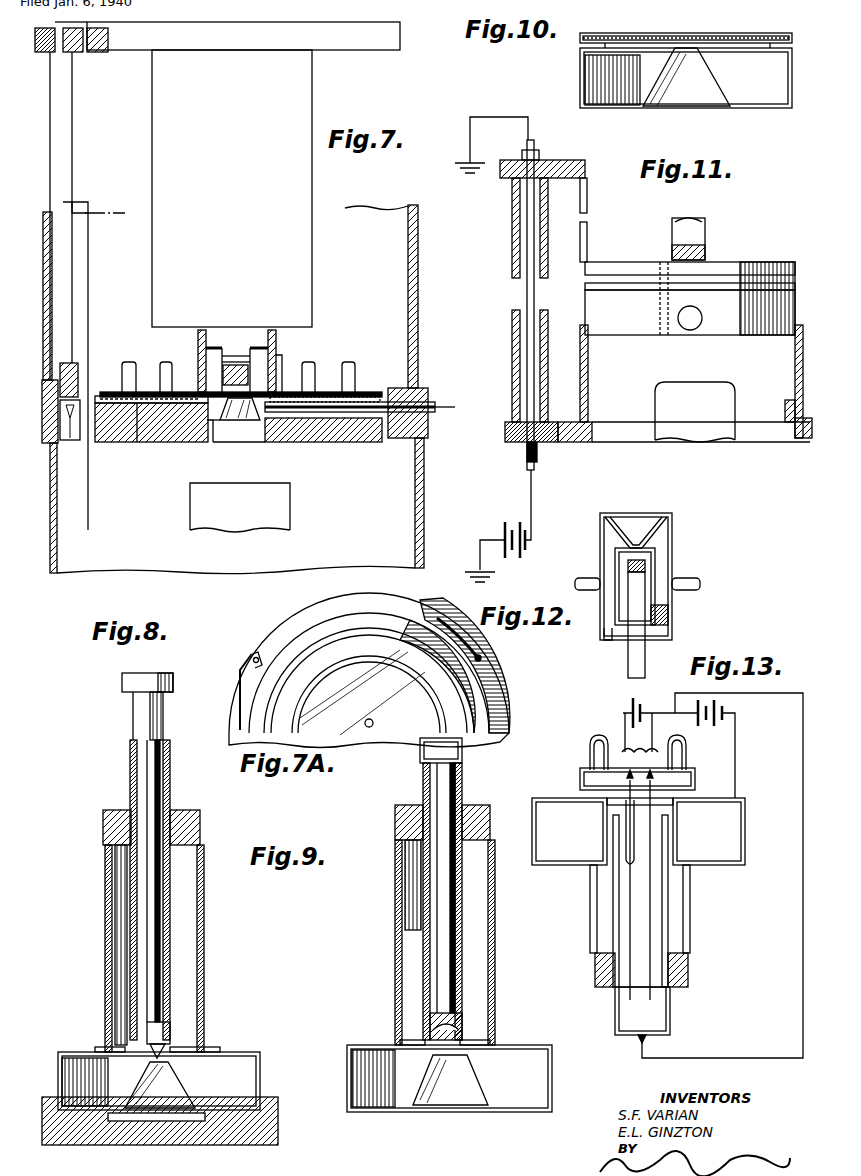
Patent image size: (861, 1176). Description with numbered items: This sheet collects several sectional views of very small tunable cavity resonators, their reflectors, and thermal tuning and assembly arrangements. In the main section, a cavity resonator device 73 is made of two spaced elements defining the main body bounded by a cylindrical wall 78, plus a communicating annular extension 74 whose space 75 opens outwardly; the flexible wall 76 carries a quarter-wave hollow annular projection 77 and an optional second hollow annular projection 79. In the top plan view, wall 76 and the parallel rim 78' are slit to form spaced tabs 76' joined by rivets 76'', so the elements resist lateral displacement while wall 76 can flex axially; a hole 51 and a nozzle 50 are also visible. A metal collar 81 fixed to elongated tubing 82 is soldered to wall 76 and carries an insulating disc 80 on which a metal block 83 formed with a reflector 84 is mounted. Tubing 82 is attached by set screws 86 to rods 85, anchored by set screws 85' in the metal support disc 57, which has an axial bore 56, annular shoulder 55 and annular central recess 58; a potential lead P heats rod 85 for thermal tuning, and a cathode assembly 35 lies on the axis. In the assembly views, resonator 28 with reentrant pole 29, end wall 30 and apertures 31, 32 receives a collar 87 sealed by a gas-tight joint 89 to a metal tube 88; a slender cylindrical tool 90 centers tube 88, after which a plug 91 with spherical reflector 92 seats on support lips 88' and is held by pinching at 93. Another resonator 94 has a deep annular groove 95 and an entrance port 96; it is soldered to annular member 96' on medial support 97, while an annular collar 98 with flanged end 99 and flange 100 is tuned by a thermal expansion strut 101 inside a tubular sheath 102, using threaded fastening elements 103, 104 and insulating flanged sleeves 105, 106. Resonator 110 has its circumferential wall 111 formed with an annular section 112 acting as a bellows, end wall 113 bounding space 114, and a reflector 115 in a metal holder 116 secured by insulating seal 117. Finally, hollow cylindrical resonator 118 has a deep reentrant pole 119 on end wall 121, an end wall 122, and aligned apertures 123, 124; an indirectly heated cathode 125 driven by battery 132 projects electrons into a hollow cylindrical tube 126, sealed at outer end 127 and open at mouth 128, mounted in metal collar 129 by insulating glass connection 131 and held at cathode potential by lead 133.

In FIG. 7, the set screws 86 is at (40, 55).
In FIG. 7, the rods 85 is at (80, 216).
In FIG. 7, the potential lead P is at (88, 274).
In FIG. 7, the elongated tubing 82 is at (312, 266).
In FIG. 7, the disc 80 is at (262, 350).
In FIG. 7, the metal block 83 is at (237, 365).
In FIG. 11, the metal block 83 is at (706, 232).
In FIG. 7, the reflector 84 is at (225, 372).
In FIG. 7, the metal collar 81 is at (276, 360).
In FIG. 7, the second hollow annular projection 79 is at (345, 393).
In FIG. 7A, the second hollow annular projection 79 is at (300, 640).
In FIG. 7, the annular extension 74 is at (140, 390).
In FIG. 7, the space 75 is at (332, 393).
In FIG. 7, the wall 76 is at (305, 358).
In FIG. 7, the hole 51 is at (262, 392).
In FIG. 7A, the hole 51 is at (373, 720).
In FIG. 7, the hollow annular projection 77 is at (315, 392).
In FIG. 7A, the hollow annular projection 77 is at (305, 692).
In FIG. 7, the cavity resonator device 73 is at (162, 432).
In FIG. 7, the rivets 76'' is at (147, 436).
In FIG. 7A, the rivets 76'' is at (376, 643).
In FIG. 7A, the tabs 76' is at (352, 657).
In FIG. 7, the axial bore 56 is at (262, 440).
In FIG. 7, the annular central recess 58 is at (368, 403).
In FIG. 7, the metal support disc 57 is at (420, 398).
In FIG. 7, the nozzle 50 is at (240, 421).
In FIG. 7, the reentrant pole 29 is at (215, 432).
In FIG. 8, the reentrant pole 29 is at (186, 1078).
In FIG. 9, the reentrant pole 29 is at (482, 1076).
In FIG. 10, the reentrant pole 29 is at (722, 84).
In FIG. 7, the annular shoulder 55 is at (190, 442).
In FIG. 7, the cylindrical wall 78 is at (144, 475).
In FIG. 7, the rim 78' is at (117, 473).
In FIG. 7A, the rim 78' is at (500, 721).
In FIG. 7, the set screws 85' is at (69, 421).
In FIG. 7, the cathode assembly 35 is at (292, 496).
In FIG. 11, the cathode assembly 35 is at (740, 393).
In FIG. 8, the slender cylindrical tool 90 is at (124, 673).
In FIG. 8, the small metal tube 88 is at (126, 890).
In FIG. 9, the small metal tube 88 is at (421, 901).
In FIG. 9, the support lips 88' is at (469, 1023).
In FIG. 8, the annular gas-tight joint 89 is at (185, 810).
In FIG. 9, the annular gas-tight joint 89 is at (478, 806).
In FIG. 8, the collar 87 is at (106, 920).
In FIG. 9, the collar 87 is at (496, 935).
In FIG. 8, the end wall 30 is at (122, 1045).
In FIG. 10, the end wall 30 is at (757, 33).
In FIG. 10, the aperture 31 is at (695, 35).
In FIG. 8, the resonator 28 is at (262, 1062).
In FIG. 9, the resonator 28 is at (556, 1090).
In FIG. 9, the pinched-in portion 93 is at (420, 752).
In FIG. 9, the plug 91 is at (440, 890).
In FIG. 9, the spherical reflector 92 is at (432, 1022).
In FIG. 10, the aperture 32 is at (686, 77).
In FIG. 10, the annular groove 95 is at (580, 60).
In FIG. 11, the annular groove 95 is at (585, 283).
In FIG. 10, the transmission line entrance port 96 is at (560, 88).
In FIG. 11, the transmission line entrance port 96 is at (697, 332).
In FIG. 11, the annular member 96' is at (780, 437).
In FIG. 11, the medial support 97 is at (805, 440).
In FIG. 11, the annular collar 98 is at (588, 195).
In FIG. 11, the flanged end 99 is at (590, 258).
In FIG. 11, the flange 100 is at (570, 168).
In FIG. 11, the thermal expansion strut 101 is at (527, 220).
In FIG. 11, the tubular sheath 102 is at (516, 256).
In FIG. 11, the threaded fastening element 103 is at (522, 446).
In FIG. 11, the threaded fastening element 104 is at (522, 156).
In FIG. 11, the insulating flanged sleeve 105 is at (548, 446).
In FIG. 11, the insulating flanged sleeve 106 is at (545, 162).
In FIG. 11, the resonator 94 is at (745, 292).
In FIG. 12, the resonator 110 is at (676, 524).
In FIG. 12, the cylindrical circumferential wall 111 is at (676, 540).
In FIG. 12, the annular section 112 is at (700, 583).
In FIG. 12, the end wall 113 is at (618, 546).
In FIG. 12, the space 114 is at (672, 607).
In FIG. 12, the reflector 115 is at (630, 562).
In FIG. 12, the metal holder 116 is at (628, 660).
In FIG. 12, the insulating seal 117 is at (616, 626).
In FIG. 13, the hollow cylindrical resonator 118 is at (748, 826).
In FIG. 13, the reentrant pole 119 is at (680, 842).
In FIG. 13, the end wall 121 is at (722, 865).
In FIG. 13, the end wall 122 is at (736, 800).
In FIG. 13, the aperture 123 is at (680, 822).
In FIG. 13, the aperture 124 is at (582, 782).
In FIG. 13, the indirectly heated cathode 125 is at (592, 765).
In FIG. 13, the hollow cylindrical tube 126 is at (672, 1010).
In FIG. 13, the outer end 127 is at (638, 1040).
In FIG. 13, the mouth 128 is at (604, 840).
In FIG. 13, the metal collar 129 is at (690, 920).
In FIG. 13, the insulating glass connection 131 is at (690, 966).
In FIG. 13, the battery 132 is at (708, 730).
In FIG. 13, the lead 133 is at (757, 694).